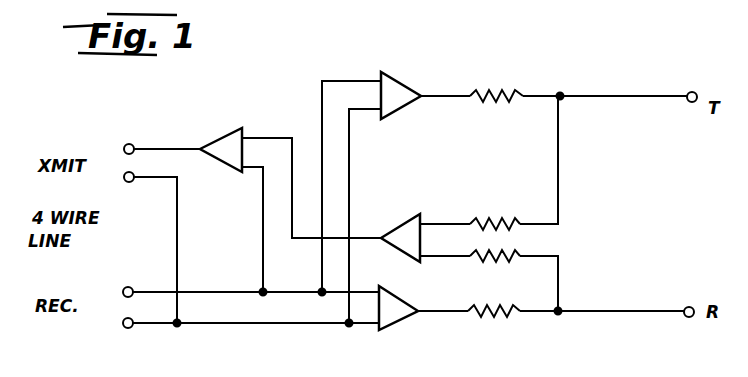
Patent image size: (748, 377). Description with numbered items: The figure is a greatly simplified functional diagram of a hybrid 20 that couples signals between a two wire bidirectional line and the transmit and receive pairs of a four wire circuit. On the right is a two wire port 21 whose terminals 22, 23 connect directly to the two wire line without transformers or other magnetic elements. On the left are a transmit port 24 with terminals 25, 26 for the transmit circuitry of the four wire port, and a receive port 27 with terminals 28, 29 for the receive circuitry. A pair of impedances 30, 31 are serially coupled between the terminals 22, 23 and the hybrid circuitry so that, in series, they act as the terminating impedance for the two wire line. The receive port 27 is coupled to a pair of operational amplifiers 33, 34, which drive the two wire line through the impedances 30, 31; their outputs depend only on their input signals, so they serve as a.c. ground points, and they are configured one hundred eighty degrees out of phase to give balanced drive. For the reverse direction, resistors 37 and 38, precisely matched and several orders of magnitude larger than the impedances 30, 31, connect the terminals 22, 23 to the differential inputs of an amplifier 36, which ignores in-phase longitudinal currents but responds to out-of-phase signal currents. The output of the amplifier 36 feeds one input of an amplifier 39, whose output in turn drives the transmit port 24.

The hybrid 20 is at (428, 69).
The two wire port 21 is at (669, 197).
The two wire terminal 22 is at (694, 91).
The two wire terminal 23 is at (685, 318).
The transmit port 24 is at (160, 167).
The transmit terminal 25 is at (132, 143).
The transmit terminal 26 is at (131, 183).
The receive port 27 is at (149, 313).
The receive terminal 28 is at (129, 286).
The receive terminal 29 is at (124, 329).
The impedance 30 is at (502, 92).
The impedance 31 is at (495, 320).
The operational amplifier 33 is at (399, 73).
The operational amplifier 34 is at (390, 333).
The amplifier 36 is at (397, 227).
The resistor 37 is at (498, 218).
The resistor 38 is at (478, 262).
The amplifier 39 is at (214, 141).